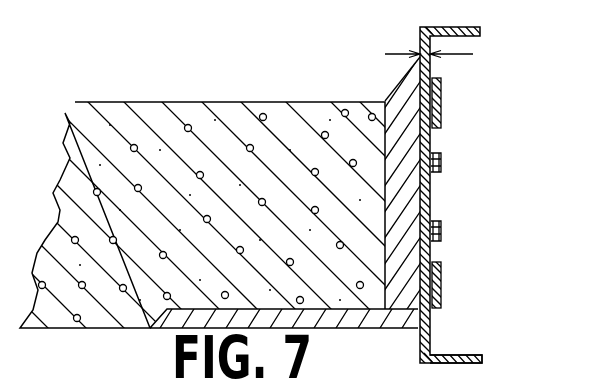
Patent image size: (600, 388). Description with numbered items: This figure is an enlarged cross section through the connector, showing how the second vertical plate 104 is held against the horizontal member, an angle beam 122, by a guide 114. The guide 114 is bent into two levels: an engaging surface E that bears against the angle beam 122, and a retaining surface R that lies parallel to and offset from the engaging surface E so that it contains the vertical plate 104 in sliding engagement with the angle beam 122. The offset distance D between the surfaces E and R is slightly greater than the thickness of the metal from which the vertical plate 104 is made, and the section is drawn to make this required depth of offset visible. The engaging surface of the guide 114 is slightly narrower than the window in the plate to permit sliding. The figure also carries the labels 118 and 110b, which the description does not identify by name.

The second vertical plate 104 is at (431, 341).
The bottom flange 110b is at (482, 360).
The guide 114 is at (431, 198).
The rivet 118 is at (442, 162).
The horizontal member 122 is at (385, 329).
The retaining surface R is at (444, 110).
The offset distance D is at (457, 55).
The engaging surface E is at (420, 145).